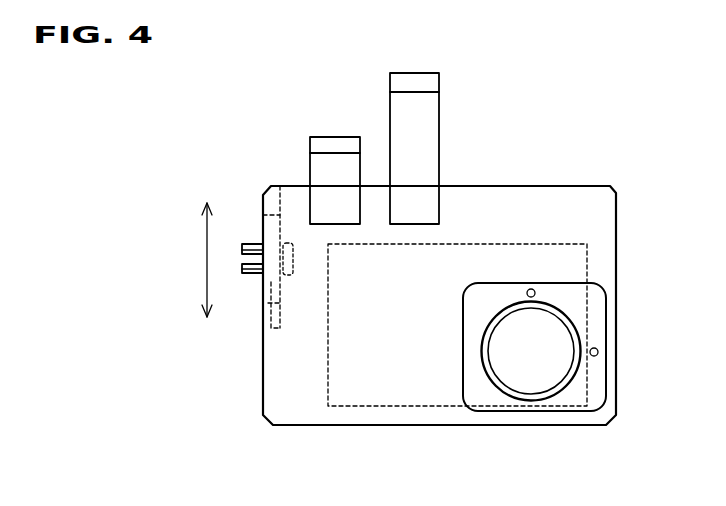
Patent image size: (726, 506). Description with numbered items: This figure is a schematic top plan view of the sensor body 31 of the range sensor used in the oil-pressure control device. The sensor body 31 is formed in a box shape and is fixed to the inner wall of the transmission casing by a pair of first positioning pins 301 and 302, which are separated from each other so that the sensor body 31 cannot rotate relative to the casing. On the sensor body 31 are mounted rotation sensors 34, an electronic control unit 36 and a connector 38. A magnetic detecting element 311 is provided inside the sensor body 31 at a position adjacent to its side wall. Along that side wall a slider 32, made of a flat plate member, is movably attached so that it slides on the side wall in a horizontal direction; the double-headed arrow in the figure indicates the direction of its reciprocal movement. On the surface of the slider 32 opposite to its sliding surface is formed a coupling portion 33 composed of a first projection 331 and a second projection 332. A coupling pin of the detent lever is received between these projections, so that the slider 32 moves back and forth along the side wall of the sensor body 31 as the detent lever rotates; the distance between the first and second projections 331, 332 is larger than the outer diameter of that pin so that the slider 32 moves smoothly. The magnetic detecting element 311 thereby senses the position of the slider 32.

The sensor body 31 is at (572, 200).
The rotation sensors 34 is at (337, 170).
The electronic control unit 36 is at (412, 340).
The connector 38 is at (531, 401).
The first positioning pin 301 is at (531, 289).
The first positioning pin 302 is at (598, 352).
The slider 32 is at (268, 330).
The magnetic detecting element 311 is at (290, 275).
The coupling portion 33 is at (235, 413).
The first projection 331 is at (250, 271).
The second projection 332 is at (245, 265).